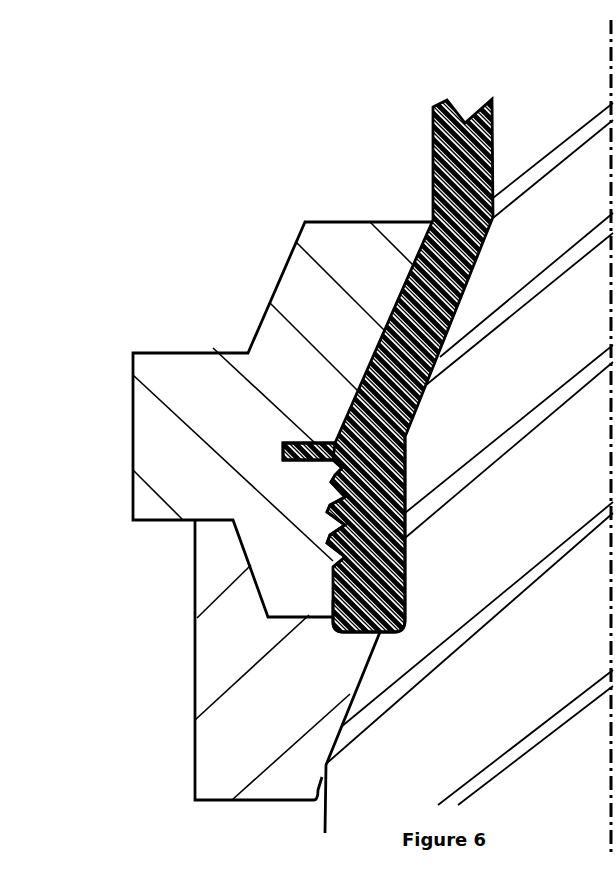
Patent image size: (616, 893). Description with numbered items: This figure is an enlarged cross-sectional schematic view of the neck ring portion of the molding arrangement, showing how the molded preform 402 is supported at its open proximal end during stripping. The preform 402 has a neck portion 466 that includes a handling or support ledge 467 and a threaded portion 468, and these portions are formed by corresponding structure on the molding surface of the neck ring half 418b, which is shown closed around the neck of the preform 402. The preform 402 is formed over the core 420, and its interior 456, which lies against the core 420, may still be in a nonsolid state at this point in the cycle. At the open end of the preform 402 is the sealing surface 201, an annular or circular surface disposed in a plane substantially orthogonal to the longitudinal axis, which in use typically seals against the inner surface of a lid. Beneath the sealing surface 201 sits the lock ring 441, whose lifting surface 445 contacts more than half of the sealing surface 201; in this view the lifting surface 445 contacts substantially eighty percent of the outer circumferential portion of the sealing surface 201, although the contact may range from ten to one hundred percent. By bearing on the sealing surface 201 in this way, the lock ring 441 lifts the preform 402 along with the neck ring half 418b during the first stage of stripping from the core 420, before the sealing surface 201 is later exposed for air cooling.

The preform 402 is at (437, 152).
The handling ledge 467 is at (313, 443).
The neck ring half 418b is at (217, 383).
The neck portion 466 is at (332, 478).
The threaded portion 468 is at (345, 508).
The interior of the preform 456 is at (372, 552).
The lifting surface 445 is at (367, 615).
The sealing surface 201 is at (352, 618).
The lock ring 441 is at (247, 742).
The core 420 is at (563, 336).